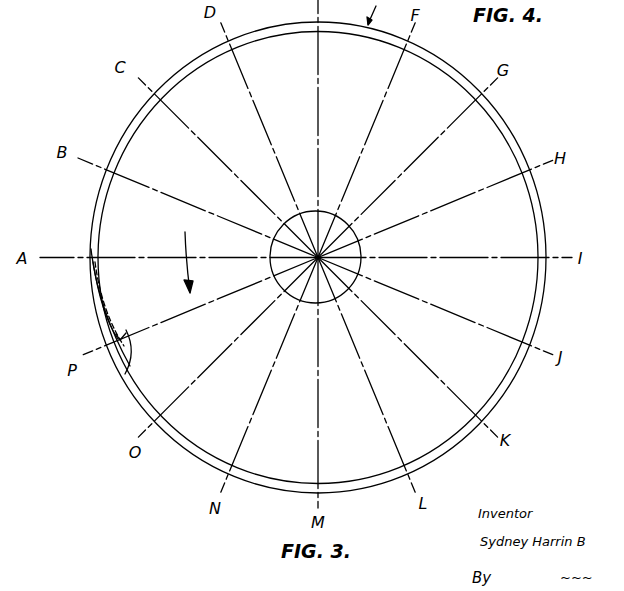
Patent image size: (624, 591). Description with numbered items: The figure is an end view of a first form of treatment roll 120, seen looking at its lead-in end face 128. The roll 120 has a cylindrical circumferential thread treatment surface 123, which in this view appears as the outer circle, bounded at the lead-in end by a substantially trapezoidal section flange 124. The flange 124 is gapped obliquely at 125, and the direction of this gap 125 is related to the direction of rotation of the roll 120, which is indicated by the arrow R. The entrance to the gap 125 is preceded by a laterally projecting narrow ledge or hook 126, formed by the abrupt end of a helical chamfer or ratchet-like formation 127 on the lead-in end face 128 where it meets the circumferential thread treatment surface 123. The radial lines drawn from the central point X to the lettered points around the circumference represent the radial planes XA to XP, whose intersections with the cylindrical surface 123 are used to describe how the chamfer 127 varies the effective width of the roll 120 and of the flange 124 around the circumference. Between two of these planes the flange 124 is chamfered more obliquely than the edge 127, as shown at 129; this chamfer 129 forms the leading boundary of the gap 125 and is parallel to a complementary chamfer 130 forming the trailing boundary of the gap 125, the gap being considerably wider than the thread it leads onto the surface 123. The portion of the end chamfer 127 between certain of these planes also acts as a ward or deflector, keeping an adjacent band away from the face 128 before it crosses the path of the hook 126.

The treatment roll 120 is at (372, 12).
The cylindrical circumferential thread treatment surface 123 is at (513, 146).
The trapezoidal section flange 124 is at (270, 31).
The gap 125 is at (91, 251).
The ledge or hook 126 is at (124, 373).
The helical chamfer 127 is at (112, 338).
The lead-in end face 128 is at (311, 196).
The chamfer 129 is at (98, 333).
The complementary chamfer 130 is at (89, 230).
The axis point of radial planes X is at (318, 256).
The arrow indicating direction of rotation R is at (191, 262).